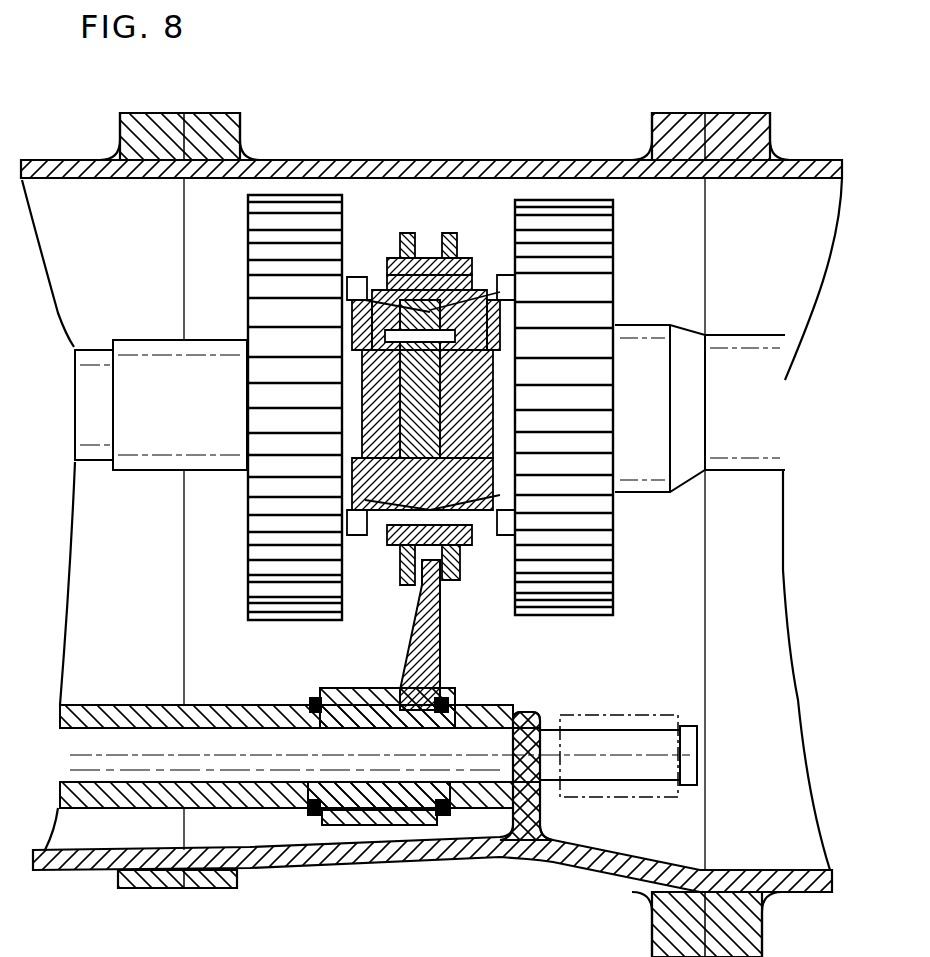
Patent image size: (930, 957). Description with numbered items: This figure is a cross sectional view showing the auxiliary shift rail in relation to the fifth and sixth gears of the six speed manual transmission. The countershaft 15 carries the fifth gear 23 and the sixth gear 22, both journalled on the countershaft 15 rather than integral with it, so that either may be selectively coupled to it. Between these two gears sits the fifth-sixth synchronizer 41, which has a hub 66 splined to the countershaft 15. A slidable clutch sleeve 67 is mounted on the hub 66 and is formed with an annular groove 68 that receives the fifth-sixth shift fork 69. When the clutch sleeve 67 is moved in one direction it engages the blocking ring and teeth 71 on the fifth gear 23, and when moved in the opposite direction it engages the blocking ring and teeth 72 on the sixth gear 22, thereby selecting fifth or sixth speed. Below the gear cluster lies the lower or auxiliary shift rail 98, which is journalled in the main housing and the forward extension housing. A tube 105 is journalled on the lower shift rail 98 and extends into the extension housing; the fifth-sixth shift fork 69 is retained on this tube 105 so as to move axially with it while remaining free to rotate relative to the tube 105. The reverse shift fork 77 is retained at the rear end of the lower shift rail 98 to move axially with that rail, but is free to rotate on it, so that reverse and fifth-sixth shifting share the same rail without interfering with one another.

The 5-6 synchronizer 41 is at (480, 212).
The countershaft 15 is at (95, 372).
The sixth gear 22 is at (258, 552).
The fifth gear 23 is at (604, 548).
The hub 66 is at (362, 352).
The clutch sleeve 67 is at (393, 258).
The annular groove 68 is at (428, 248).
The blocking ring and teeth 71 is at (502, 300).
The blocking ring and teeth 72 is at (350, 283).
The 5-6 shift fork 69 is at (425, 660).
The lower or auxiliary shift rail 98 is at (484, 740).
The tube 105 is at (110, 710).
The reverse shift fork 77 is at (645, 715).